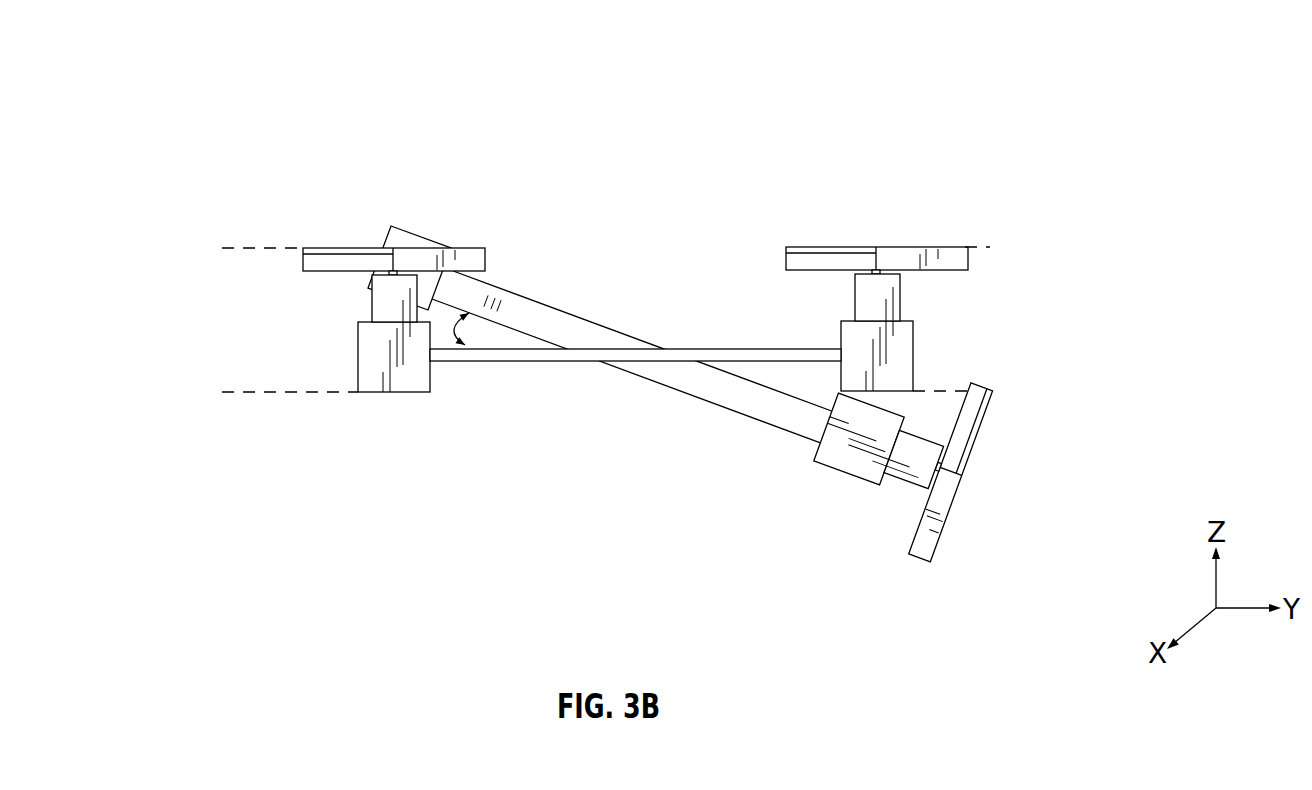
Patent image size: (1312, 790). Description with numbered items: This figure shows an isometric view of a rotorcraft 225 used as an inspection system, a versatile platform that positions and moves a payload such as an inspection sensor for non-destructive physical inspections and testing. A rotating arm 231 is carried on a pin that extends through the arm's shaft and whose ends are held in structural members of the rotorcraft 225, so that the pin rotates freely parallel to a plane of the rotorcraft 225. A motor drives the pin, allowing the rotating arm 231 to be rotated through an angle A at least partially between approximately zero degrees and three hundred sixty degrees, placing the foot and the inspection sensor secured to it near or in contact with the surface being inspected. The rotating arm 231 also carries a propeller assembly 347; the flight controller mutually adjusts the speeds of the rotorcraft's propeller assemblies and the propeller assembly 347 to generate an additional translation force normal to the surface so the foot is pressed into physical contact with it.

The rotorcraft 225 is at (998, 80).
The rotating arm 231 is at (1018, 628).
The propeller assembly 347 is at (921, 459).
The angle A is at (449, 333).